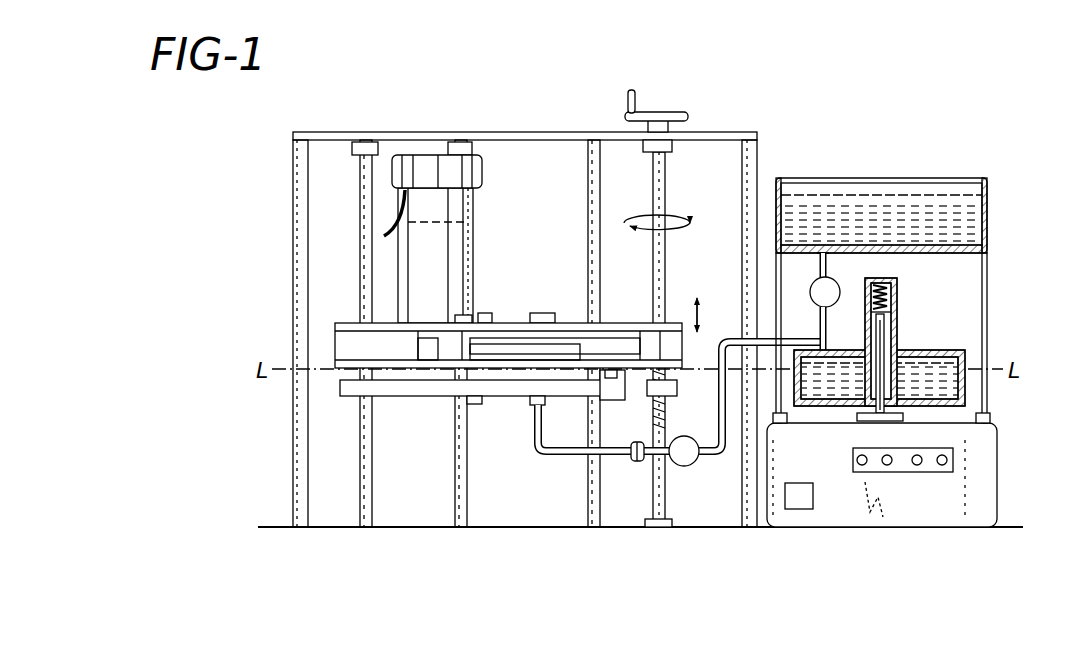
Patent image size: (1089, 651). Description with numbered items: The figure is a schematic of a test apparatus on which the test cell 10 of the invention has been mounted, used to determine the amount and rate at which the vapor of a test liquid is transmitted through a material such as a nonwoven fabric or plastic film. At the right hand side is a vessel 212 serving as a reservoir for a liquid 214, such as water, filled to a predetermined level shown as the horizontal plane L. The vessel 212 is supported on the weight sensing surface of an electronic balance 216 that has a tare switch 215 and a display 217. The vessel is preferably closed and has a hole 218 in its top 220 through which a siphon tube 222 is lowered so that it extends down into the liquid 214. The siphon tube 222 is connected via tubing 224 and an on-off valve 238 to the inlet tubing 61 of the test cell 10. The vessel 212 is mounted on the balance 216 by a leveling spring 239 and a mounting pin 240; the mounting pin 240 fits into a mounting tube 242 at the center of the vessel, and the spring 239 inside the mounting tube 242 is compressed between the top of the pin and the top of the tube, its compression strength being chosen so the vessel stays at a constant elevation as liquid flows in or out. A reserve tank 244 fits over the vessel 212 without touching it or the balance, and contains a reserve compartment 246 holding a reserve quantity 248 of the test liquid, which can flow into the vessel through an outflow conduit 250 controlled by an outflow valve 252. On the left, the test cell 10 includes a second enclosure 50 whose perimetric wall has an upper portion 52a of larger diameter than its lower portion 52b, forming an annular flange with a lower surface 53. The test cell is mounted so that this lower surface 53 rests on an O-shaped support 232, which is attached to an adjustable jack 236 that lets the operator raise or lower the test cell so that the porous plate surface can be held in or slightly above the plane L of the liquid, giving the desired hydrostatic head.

The test cell 10 is at (516, 298).
The second enclosure 50 is at (642, 366).
The upper portion of perimetric wall 52a is at (447, 378).
The lower portion of perimetric wall 52b is at (456, 396).
The lower surface of flange 53 is at (481, 400).
The inlet tubing 61 is at (551, 456).
The vessel 212 is at (966, 396).
The liquid 214 is at (950, 376).
The tare switch 215 is at (800, 512).
The electronic balance 216 is at (957, 515).
The display 217 is at (905, 466).
The hole 218 is at (836, 355).
The top 220 is at (966, 352).
The siphon tube 222 is at (812, 385).
The tubing 224 is at (727, 337).
The O-shaped support 232 is at (645, 394).
The adjustable jack 236 is at (668, 178).
The on-off valve 238 is at (690, 467).
The leveling spring 239 is at (893, 301).
The mounting pin 240 is at (886, 323).
The mounting tube 242 is at (896, 290).
The reserve tank 244 is at (992, 183).
The reserve compartment 246 is at (987, 255).
The reserve quantity of test liquid 248 is at (885, 200).
The outflow conduit 250 is at (816, 250).
The outflow valve 252 is at (813, 283).